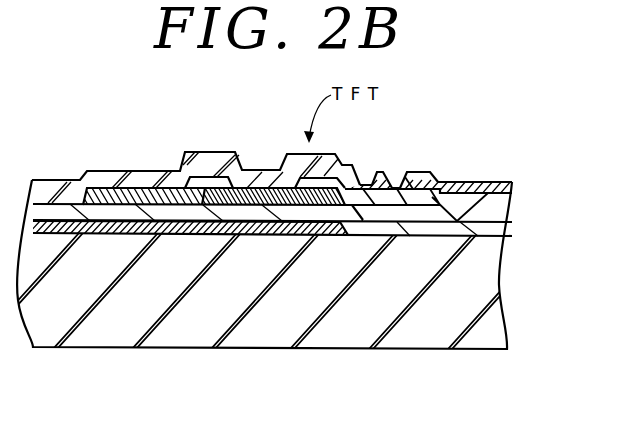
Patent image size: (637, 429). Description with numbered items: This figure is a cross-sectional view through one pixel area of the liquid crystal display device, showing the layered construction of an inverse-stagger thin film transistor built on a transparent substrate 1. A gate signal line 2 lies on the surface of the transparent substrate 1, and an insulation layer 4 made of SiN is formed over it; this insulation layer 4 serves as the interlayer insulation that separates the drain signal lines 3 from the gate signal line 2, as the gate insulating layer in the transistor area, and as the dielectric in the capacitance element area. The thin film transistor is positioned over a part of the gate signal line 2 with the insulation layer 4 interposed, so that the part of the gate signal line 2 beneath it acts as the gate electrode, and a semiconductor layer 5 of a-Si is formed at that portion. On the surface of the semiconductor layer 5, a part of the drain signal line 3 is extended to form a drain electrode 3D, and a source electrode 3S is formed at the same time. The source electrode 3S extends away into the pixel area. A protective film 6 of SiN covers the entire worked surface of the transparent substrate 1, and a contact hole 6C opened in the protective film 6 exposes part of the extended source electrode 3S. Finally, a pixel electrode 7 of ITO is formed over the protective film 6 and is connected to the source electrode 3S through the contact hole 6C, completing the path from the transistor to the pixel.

The transparent substrate 1 is at (488, 281).
The gate signal line 2 is at (103, 228).
The drain signal line 3 is at (103, 189).
The drain electrode 3D is at (208, 187).
The source electrode 3S is at (315, 178).
The insulation layer 4 is at (503, 226).
The semiconductor layer 5 is at (251, 170).
The protective film 6 is at (505, 205).
The contact hole 6C is at (410, 172).
The pixel electrode 7 is at (511, 188).